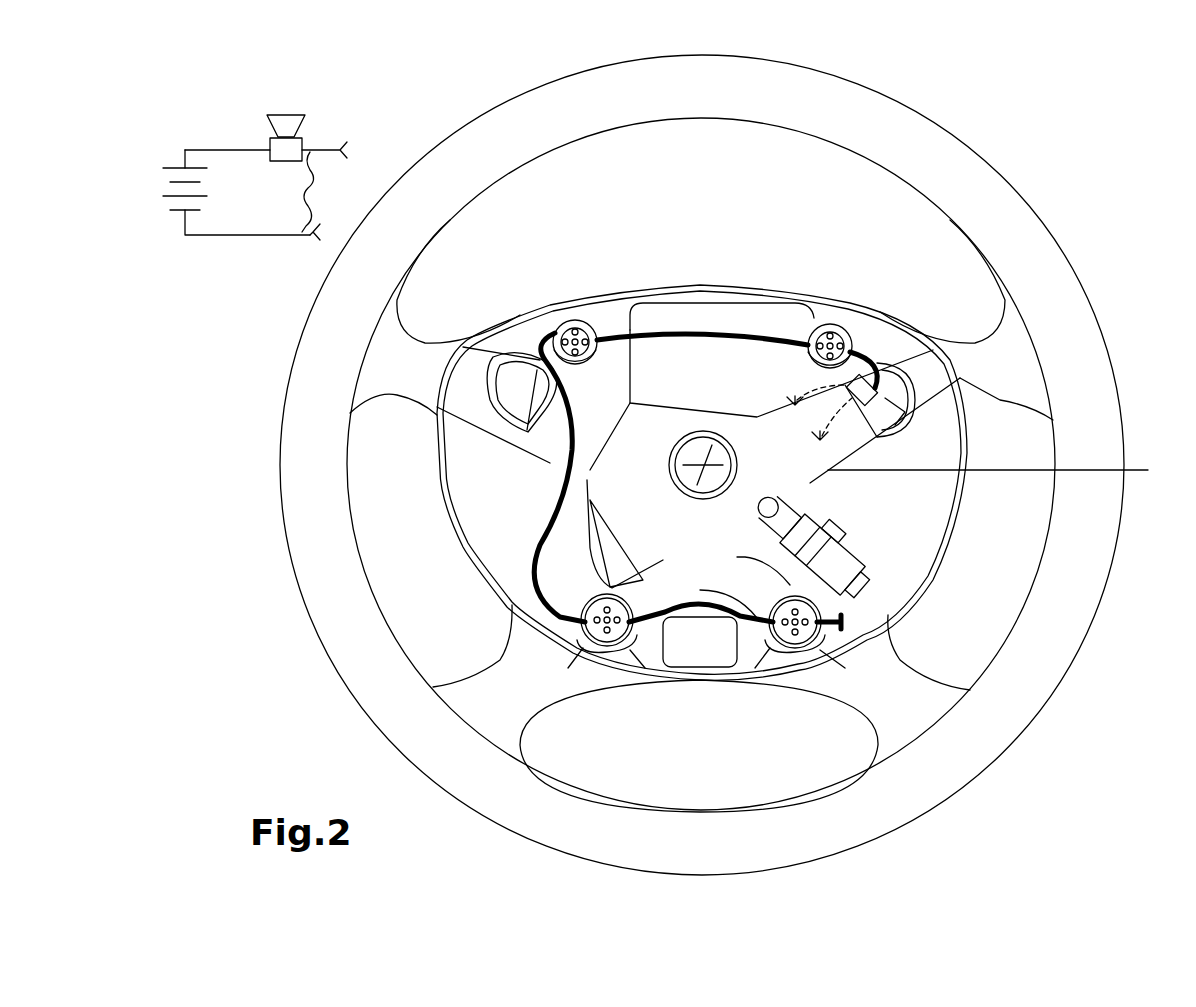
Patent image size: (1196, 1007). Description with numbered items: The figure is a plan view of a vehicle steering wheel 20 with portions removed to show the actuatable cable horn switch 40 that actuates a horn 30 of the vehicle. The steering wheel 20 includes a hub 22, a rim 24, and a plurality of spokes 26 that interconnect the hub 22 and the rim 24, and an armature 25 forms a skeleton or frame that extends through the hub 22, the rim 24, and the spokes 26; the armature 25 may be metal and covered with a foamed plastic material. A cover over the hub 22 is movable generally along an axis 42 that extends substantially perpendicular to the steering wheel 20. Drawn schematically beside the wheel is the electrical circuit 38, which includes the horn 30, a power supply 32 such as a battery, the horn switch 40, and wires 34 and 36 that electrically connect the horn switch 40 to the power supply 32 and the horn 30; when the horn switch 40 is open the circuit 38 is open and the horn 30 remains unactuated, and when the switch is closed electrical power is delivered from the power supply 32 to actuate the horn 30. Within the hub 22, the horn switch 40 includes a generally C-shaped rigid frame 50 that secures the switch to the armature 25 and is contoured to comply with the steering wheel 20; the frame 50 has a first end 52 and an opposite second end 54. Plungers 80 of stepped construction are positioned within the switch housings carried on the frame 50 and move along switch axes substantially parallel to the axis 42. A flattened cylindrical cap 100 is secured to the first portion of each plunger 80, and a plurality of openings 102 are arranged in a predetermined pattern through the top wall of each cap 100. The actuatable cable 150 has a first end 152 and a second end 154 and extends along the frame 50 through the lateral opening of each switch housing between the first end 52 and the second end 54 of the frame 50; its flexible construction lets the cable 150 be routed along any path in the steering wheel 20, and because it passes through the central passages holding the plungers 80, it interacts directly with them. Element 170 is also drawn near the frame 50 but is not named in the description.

The steering wheel 20 is at (960, 119).
The hub 22 is at (957, 510).
The rim 24 is at (1012, 212).
The armature 25 is at (1004, 470).
The spokes 26 is at (875, 698).
The horn 30 is at (285, 122).
The power supply 32 is at (165, 184).
The wire 34 is at (322, 148).
The wire 36 is at (247, 238).
The electrical circuit 38 is at (226, 105).
The horn switch 40 is at (498, 505).
The axis 42 is at (688, 480).
The frame 50 is at (584, 549).
The first end 52 is at (835, 322).
The second end 54 is at (830, 640).
The plunger 80 is at (597, 353).
The cap 100 is at (815, 362).
The openings 102 is at (583, 340).
The actuatable cable 150 is at (772, 240).
The first end 152 is at (880, 347).
The second end 154 is at (833, 613).
The mounting bracket 170 is at (910, 404).